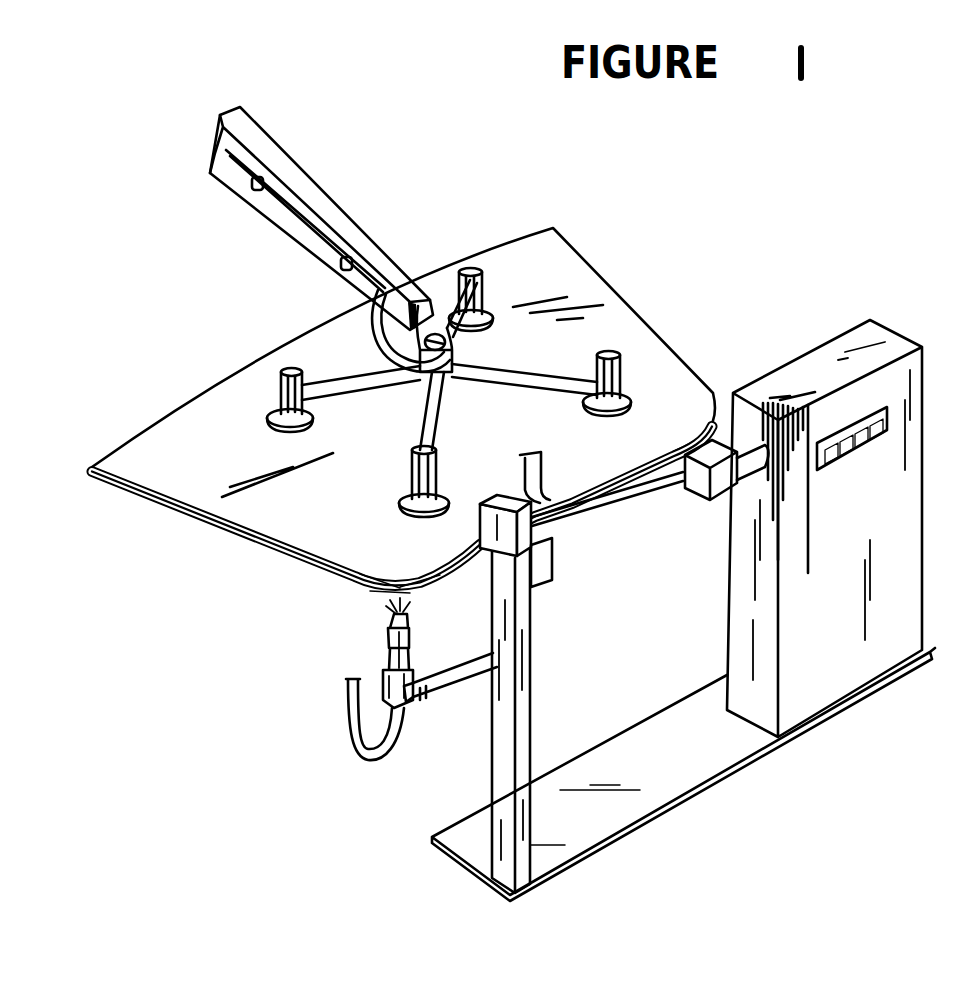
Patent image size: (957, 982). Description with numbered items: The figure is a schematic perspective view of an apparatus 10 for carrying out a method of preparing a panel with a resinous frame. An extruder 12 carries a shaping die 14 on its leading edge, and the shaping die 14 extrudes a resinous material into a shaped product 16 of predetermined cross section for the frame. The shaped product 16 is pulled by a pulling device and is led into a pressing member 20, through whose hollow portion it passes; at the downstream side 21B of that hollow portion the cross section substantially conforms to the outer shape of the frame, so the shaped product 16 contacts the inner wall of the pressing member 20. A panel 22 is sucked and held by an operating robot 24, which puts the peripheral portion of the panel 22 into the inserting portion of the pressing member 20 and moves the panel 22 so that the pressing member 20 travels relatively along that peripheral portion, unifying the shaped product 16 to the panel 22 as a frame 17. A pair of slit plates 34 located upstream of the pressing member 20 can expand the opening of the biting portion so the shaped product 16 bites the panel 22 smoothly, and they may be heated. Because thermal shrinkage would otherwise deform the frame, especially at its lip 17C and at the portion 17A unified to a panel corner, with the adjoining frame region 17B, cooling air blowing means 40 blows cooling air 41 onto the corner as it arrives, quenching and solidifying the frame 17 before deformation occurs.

The cleaning apparatus 10 is at (726, 339).
The extruder 12 is at (882, 327).
The shaping die 14 is at (712, 480).
The shaped product 16 is at (662, 483).
The rail 17 is at (213, 527).
The portion unified to a corner of the panel 17A is at (386, 576).
The rail portion 17B is at (385, 595).
The lip 17C is at (405, 580).
The pressing member 20 is at (505, 497).
The downstream side 21B is at (480, 520).
The panel 22 is at (590, 272).
The operating robot 24 is at (313, 180).
The slit plates 34 is at (542, 490).
The cooling air blowing means 40 is at (412, 637).
The cooling air 41 is at (410, 607).